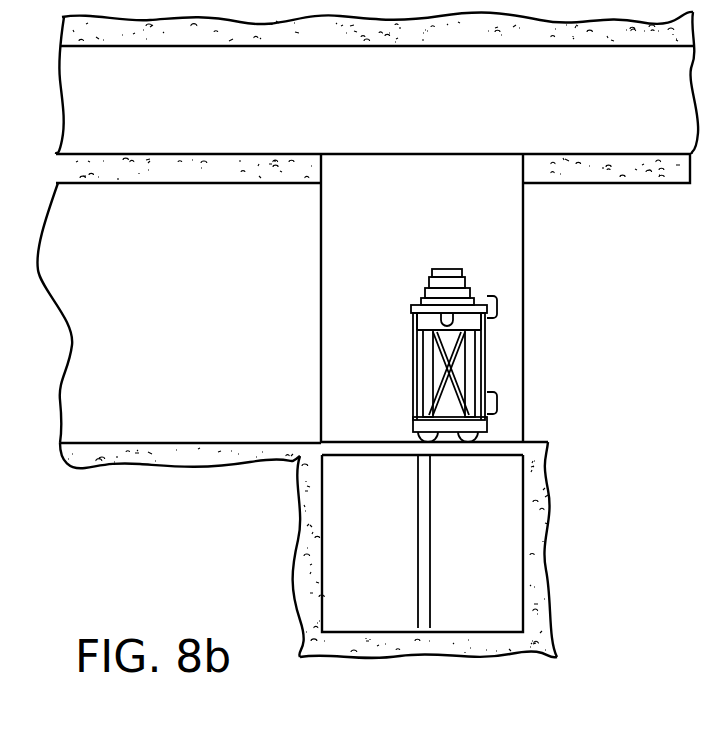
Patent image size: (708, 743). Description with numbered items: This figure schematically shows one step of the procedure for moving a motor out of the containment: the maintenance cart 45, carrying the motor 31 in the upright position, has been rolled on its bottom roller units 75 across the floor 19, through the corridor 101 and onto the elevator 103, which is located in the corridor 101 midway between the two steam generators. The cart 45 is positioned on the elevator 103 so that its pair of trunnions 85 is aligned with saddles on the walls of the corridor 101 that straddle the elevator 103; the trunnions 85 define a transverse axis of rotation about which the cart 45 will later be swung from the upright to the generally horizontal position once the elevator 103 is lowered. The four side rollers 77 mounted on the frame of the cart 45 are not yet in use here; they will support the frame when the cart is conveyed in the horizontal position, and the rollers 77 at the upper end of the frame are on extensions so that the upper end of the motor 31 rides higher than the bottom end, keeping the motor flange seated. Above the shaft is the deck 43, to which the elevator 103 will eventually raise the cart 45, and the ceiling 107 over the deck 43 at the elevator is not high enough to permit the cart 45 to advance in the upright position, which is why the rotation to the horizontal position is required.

The ceiling 107 is at (172, 47).
The deck 43 is at (198, 155).
The corridor 101 is at (30, 305).
The floor 19 is at (177, 441).
The elevator 103 is at (368, 441).
The maintenance cart 45 is at (398, 361).
The motor 31 is at (433, 268).
The trunnions 85 is at (448, 312).
The side rollers 77 is at (490, 308).
The bottom roller units 75 is at (482, 428).